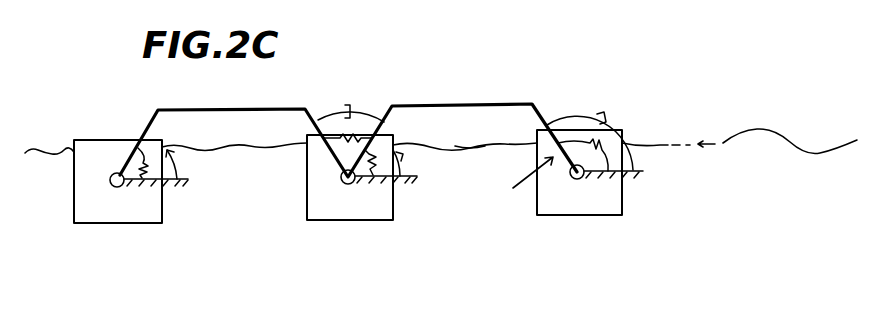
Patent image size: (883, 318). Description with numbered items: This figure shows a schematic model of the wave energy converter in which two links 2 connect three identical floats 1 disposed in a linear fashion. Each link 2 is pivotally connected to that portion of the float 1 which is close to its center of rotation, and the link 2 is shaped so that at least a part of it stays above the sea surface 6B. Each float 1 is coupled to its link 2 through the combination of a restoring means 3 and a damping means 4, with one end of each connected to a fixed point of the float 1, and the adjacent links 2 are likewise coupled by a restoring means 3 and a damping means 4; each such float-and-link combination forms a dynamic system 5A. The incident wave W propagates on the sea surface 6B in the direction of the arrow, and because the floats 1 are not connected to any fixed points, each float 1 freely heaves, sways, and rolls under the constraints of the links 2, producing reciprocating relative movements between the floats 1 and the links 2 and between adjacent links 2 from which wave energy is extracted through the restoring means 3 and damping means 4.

The float 1 is at (136, 203).
The link 2 is at (226, 108).
The restoring means 3 is at (146, 141).
The damping means 4 is at (167, 148).
The dynamic system 5A is at (510, 217).
The sea surface 6B is at (472, 150).
The incident wave W is at (777, 132).